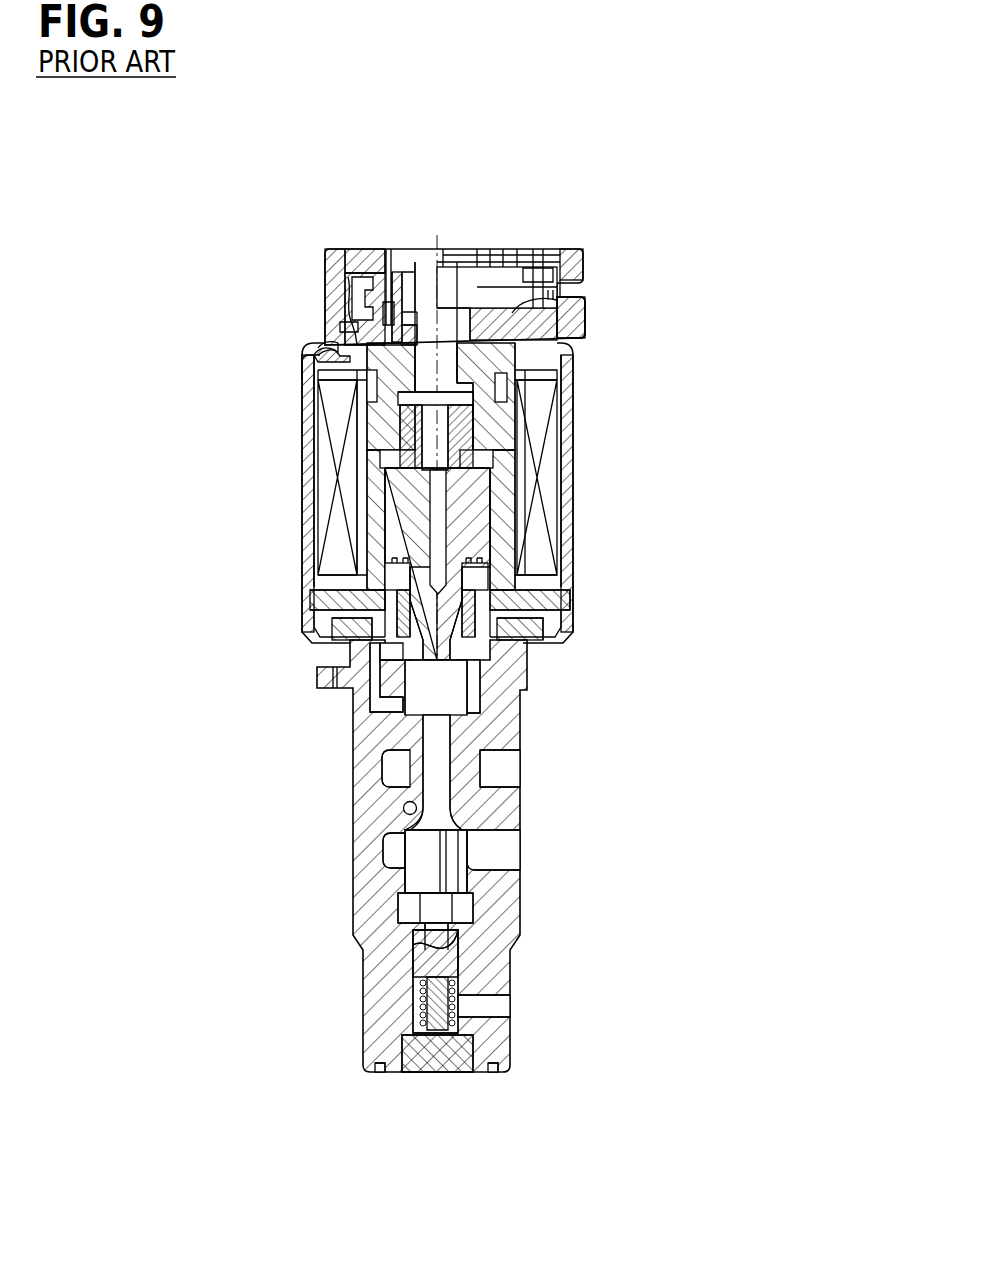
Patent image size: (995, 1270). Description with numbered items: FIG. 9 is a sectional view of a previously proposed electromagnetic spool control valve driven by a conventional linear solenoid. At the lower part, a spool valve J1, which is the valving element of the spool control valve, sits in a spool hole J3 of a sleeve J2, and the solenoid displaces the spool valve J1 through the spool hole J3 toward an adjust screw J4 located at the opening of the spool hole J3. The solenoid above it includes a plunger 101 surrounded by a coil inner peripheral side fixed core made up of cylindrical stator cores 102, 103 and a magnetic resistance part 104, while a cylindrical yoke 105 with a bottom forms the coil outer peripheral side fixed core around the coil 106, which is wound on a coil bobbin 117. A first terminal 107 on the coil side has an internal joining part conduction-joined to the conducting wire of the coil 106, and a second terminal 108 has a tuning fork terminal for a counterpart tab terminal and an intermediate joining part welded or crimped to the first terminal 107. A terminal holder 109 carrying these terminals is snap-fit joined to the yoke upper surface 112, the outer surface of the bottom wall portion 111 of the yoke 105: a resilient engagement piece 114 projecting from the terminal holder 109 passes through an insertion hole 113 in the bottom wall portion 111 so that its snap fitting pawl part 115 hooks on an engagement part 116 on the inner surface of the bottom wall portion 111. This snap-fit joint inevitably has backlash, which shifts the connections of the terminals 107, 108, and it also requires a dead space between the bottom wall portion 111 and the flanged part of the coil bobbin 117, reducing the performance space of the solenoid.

The plunger 101 is at (561, 526).
The cylindrical stator core 102 is at (576, 452).
The cylindrical stator core 103 is at (549, 466).
The magnetic resistance part 104 is at (524, 503).
The yoke 105 is at (516, 487).
The coil 106 is at (524, 477).
The first terminal 107 is at (581, 213).
The second terminal 108 is at (430, 218).
The terminal holder 109 is at (322, 246).
The bottom wall portion 111 is at (646, 313).
The yoke upper surface 112 is at (623, 274).
The insertion hole 113 is at (282, 302).
The resilient engagement piece 114 is at (274, 314).
The snap fitting pawl part 115 is at (264, 365).
The engagement part 116 is at (258, 337).
The coil bobbin 117 is at (246, 397).
The spool valve J1 is at (534, 861).
The sleeve J2 is at (490, 856).
The spool hole J3 is at (321, 822).
The adjust screw J4 is at (440, 1058).